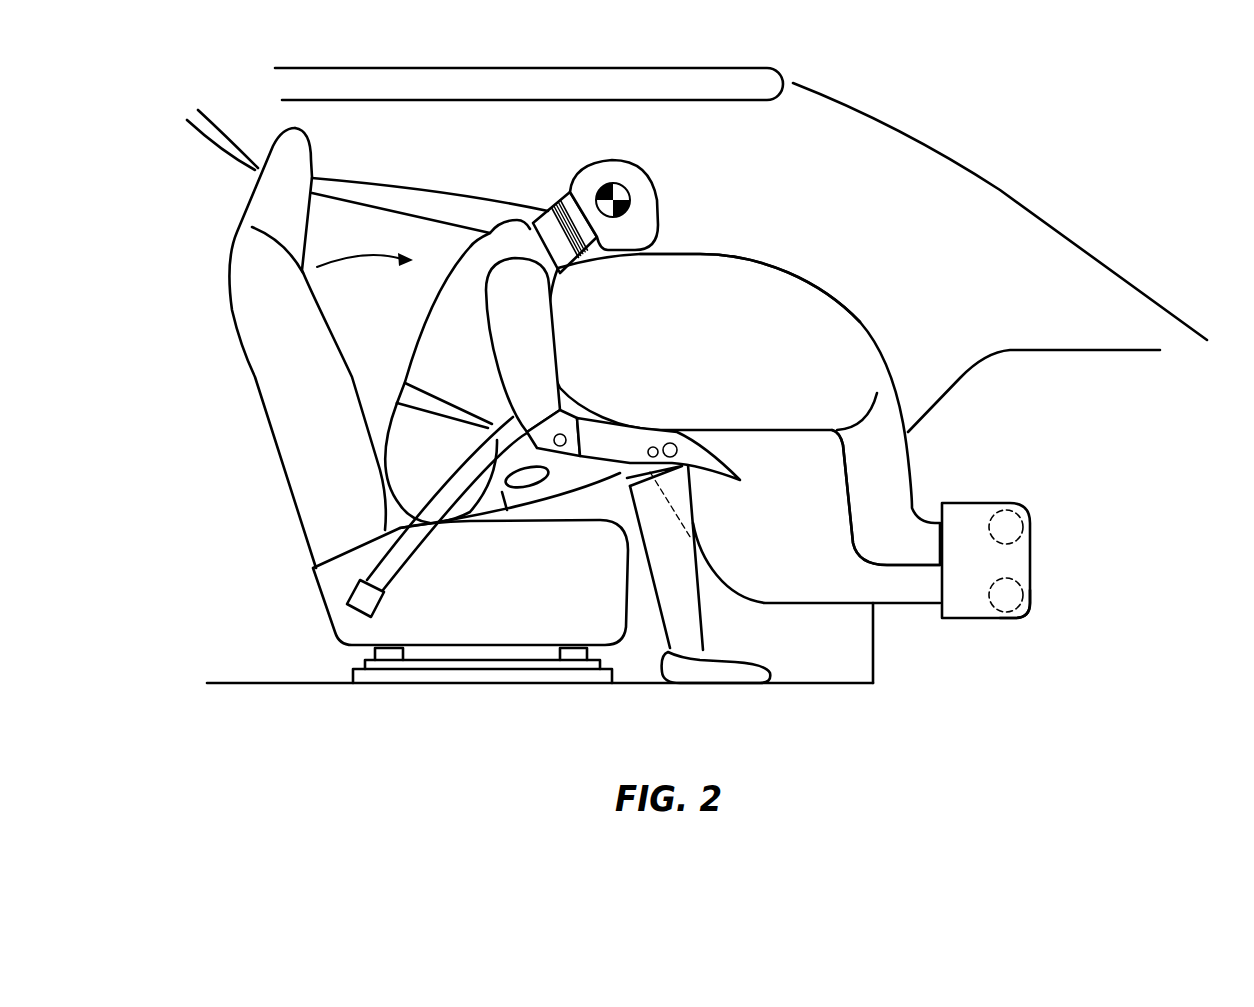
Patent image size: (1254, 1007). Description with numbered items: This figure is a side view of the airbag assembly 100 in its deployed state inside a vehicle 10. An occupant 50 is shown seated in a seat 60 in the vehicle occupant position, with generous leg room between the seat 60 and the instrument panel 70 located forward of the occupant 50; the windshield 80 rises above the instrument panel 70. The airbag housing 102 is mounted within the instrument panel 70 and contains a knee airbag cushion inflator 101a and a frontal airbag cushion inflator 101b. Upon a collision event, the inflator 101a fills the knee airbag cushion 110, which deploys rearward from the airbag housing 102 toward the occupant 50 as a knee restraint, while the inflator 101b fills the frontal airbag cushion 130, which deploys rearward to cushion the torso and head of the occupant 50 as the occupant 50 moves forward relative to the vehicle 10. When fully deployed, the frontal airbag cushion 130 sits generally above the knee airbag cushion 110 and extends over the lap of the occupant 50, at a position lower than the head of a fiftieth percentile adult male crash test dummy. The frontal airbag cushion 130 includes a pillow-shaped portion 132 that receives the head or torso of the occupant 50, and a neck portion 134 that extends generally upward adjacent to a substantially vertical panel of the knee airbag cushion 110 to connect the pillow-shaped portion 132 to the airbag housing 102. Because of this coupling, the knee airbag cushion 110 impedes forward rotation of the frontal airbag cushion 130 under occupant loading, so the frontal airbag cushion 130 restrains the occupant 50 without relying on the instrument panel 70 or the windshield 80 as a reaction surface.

The vehicle 10 is at (1019, 169).
The windshield 80 is at (1095, 246).
The instrument panel 70 is at (1056, 413).
The vehicle occupant 50 is at (477, 362).
The seat 60 is at (503, 600).
The airbag assembly 100 is at (878, 335).
The knee airbag cushion inflator 101a is at (1012, 603).
The frontal airbag cushion inflator 101b is at (1010, 527).
The airbag housing 102 is at (1031, 604).
The knee airbag cushion 110 is at (800, 520).
The frontal airbag cushion 130 is at (724, 357).
The pillow-shaped portion 132 is at (740, 257).
The neck portion 134 is at (911, 477).